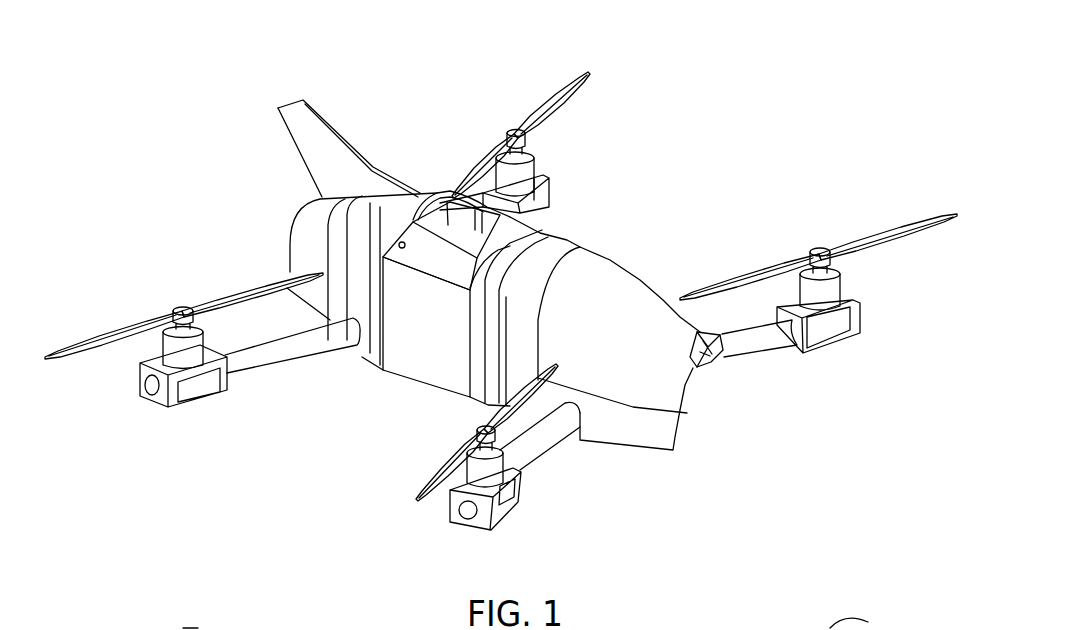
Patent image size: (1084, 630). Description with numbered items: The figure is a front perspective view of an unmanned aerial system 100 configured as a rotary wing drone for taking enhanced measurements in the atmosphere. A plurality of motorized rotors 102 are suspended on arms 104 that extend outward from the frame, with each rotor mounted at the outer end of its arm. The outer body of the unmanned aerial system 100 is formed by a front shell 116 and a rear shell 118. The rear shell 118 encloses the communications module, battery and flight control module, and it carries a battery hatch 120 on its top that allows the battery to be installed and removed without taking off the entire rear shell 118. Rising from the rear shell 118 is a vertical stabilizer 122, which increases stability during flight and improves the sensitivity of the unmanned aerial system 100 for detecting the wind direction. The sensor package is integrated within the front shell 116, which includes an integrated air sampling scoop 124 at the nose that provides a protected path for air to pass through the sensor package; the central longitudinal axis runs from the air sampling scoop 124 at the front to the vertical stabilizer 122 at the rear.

The unmanned aerial system 100 is at (520, 55).
The motorized rotors 102 is at (527, 152).
The arms 104 is at (310, 345).
The front shell 116 is at (603, 342).
The rear shell 118 is at (312, 223).
The battery hatch 120 is at (443, 213).
The vertical stabilizer 122 is at (310, 128).
The air sampling scoop 124 is at (707, 370).